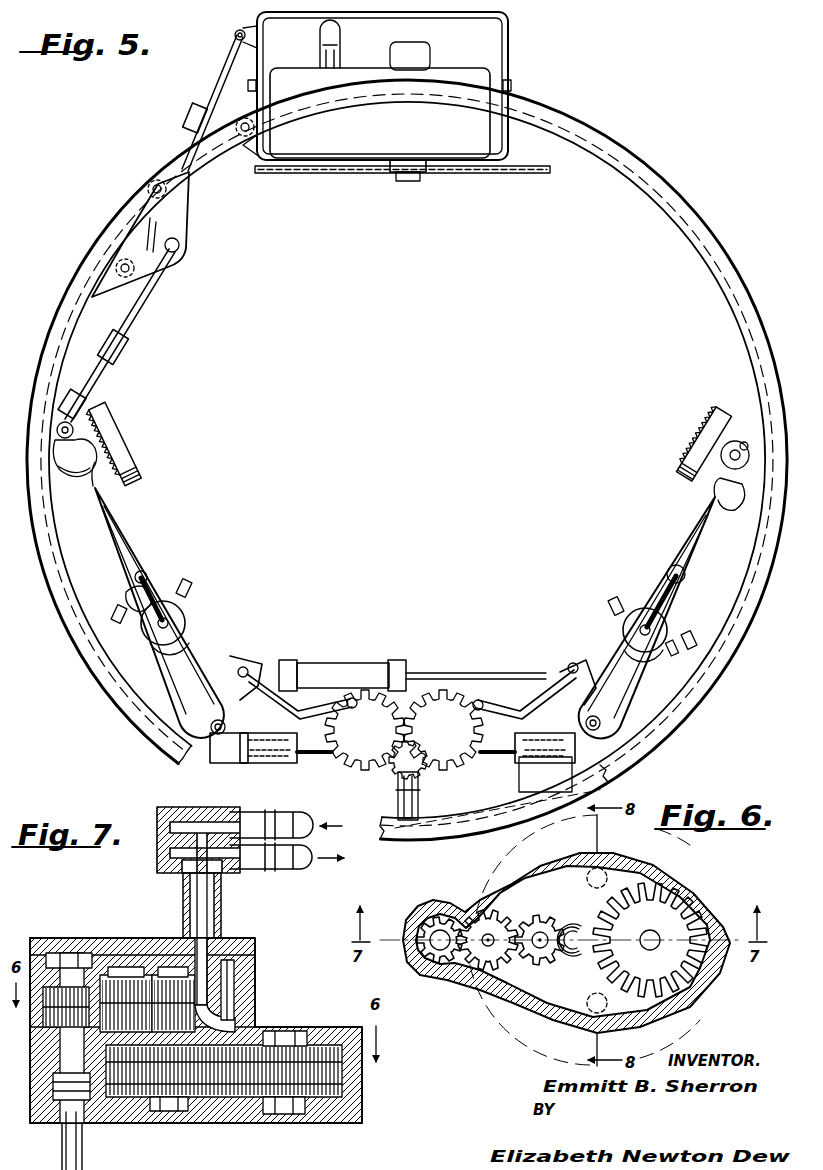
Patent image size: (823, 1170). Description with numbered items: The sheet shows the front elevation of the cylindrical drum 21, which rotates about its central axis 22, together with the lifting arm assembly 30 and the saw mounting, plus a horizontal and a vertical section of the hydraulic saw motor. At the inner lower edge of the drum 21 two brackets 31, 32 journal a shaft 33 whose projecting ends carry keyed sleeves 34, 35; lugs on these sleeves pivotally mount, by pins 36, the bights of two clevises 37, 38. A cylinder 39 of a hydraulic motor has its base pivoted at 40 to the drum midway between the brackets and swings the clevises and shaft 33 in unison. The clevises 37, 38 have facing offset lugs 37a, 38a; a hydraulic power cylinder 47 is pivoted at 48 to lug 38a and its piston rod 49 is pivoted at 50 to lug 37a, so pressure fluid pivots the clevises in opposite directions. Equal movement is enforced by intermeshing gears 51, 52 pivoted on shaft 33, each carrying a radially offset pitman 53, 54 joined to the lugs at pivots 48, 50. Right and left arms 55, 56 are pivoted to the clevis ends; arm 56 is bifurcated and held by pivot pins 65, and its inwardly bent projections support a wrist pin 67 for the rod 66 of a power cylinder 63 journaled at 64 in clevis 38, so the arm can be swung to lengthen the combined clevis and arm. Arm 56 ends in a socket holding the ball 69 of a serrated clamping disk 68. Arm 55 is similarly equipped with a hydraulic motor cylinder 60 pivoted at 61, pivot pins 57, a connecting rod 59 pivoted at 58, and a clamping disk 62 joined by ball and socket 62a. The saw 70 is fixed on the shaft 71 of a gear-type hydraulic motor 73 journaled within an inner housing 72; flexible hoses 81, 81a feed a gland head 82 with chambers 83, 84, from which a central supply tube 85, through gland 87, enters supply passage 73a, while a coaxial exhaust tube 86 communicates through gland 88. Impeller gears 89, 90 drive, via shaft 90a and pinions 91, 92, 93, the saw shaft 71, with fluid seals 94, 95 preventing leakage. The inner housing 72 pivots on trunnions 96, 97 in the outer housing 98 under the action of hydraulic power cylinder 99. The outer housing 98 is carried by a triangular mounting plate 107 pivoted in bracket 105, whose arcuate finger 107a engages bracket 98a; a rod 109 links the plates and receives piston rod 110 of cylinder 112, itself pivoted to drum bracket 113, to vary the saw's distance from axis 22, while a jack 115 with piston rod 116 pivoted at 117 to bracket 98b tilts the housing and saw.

In FIG. 5, the drum 21 is at (646, 173).
In FIG. 5, the central axis 22 is at (407, 463).
In FIG. 5, the lifting arm assembly 30 is at (318, 650).
In FIG. 5, the bracket 31 is at (524, 775).
In FIG. 5, the bracket 32 is at (296, 762).
In FIG. 5, the shaft 33 is at (506, 757).
In FIG. 5, the sleeve 34 is at (607, 752).
In FIG. 5, the sleeve 35 is at (232, 742).
In FIG. 5, the pins 36 is at (216, 720).
In FIG. 5, the clevis 37 is at (648, 673).
In FIG. 5, the lug 37a is at (596, 672).
In FIG. 5, the clevis 38 is at (162, 690).
In FIG. 5, the lug 38a is at (246, 662).
In FIG. 5, the cylinder 39 is at (400, 773).
In FIG. 5, the pivot 40 is at (418, 796).
In FIG. 5, the hydraulic power cylinder 47 is at (326, 680).
In FIG. 5, the pivot 48 is at (250, 670).
In FIG. 5, the piston rod 49 is at (433, 678).
In FIG. 5, the pivot 50 is at (571, 666).
In FIG. 5, the gear 51 is at (456, 764).
In FIG. 5, the gear 52 is at (363, 762).
In FIG. 5, the pitman 53 is at (526, 694).
In FIG. 5, the pitman 54 is at (278, 688).
In FIG. 5, the right arm 55 is at (700, 513).
In FIG. 5, the left arm 56 is at (110, 514).
In FIG. 5, the pivot pins 57 is at (624, 598).
In FIG. 5, the pivot 58 is at (680, 568).
In FIG. 5, the connecting rod 59 is at (675, 647).
In FIG. 5, the hydraulic motor cylinder 60 is at (644, 650).
In FIG. 5, the pivot 61 is at (632, 632).
In FIG. 5, the clamping disk 62 is at (690, 445).
In FIG. 5, the ball and socket 62a is at (731, 458).
In FIG. 5, the power cylinder 63 is at (180, 619).
In FIG. 5, the journal 64 is at (150, 648).
In FIG. 5, the pivot pins 65 is at (188, 597).
In FIG. 5, the rod 66 is at (166, 575).
In FIG. 5, the wrist pin 67 is at (124, 597).
In FIG. 5, the clamping disk 68 is at (121, 462).
In FIG. 5, the ball 69 is at (78, 458).
In FIG. 5, the saw 70 is at (353, 176).
In FIG. 5, the shaft 71 is at (410, 182).
In FIG. 7, the shaft 71 is at (82, 1155).
In FIG. 6, the shaft 71 is at (437, 950).
In FIG. 5, the inner housing 72 is at (481, 137).
In FIG. 7, the hydraulic motor 73 is at (258, 1122).
In FIG. 6, the hydraulic motor 73 is at (727, 914).
In FIG. 7, the supply passage 73a is at (236, 1012).
In FIG. 6, the supply passage 73a is at (580, 1029).
In FIG. 7, the flexible hose 81 is at (300, 818).
In FIG. 7, the flexible hose 81a is at (299, 866).
In FIG. 5, the gland head 82 is at (425, 52).
In FIG. 7, the gland head 82 is at (170, 808).
In FIG. 7, the fluid chamber 83 is at (176, 828).
In FIG. 7, the fluid chamber 84 is at (170, 862).
In FIG. 7, the central supply tube 85 is at (196, 883).
In FIG. 7, the exhaust tube 86 is at (184, 908).
In FIG. 6, the exhaust tube 86 is at (604, 851).
In FIG. 7, the gland 87 is at (178, 850).
In FIG. 7, the gland 88 is at (160, 874).
In FIG. 7, the impeller gear 89 is at (306, 1043).
In FIG. 6, the impeller gear 89 is at (688, 900).
In FIG. 7, the impeller gear 90 is at (211, 1098).
In FIG. 6, the impeller gear 90 is at (548, 998).
In FIG. 7, the shaft 90a is at (175, 1112).
In FIG. 7, the pinion 91 is at (165, 990).
In FIG. 6, the pinion 91 is at (541, 962).
In FIG. 7, the pinion 92 is at (120, 978).
In FIG. 6, the pinion 92 is at (486, 955).
In FIG. 7, the pinion 93 is at (70, 986).
In FIG. 6, the pinion 93 is at (446, 962).
In FIG. 7, the fluid seal 94 is at (219, 1027).
In FIG. 6, the fluid seal 94 is at (569, 940).
In FIG. 7, the fluid seal 95 is at (50, 1124).
In FIG. 5, the trunnion 96 is at (249, 95).
In FIG. 5, the trunnion 97 is at (512, 87).
In FIG. 5, the outer housing 98 is at (508, 54).
In FIG. 5, the bracket 98a is at (262, 143).
In FIG. 5, the bracket 98b is at (236, 32).
In FIG. 5, the hydraulic power cylinder 99 is at (338, 37).
In FIG. 5, the bracket 105 is at (120, 263).
In FIG. 5, the mounting plate 107 is at (165, 234).
In FIG. 5, the arcuate finger 107a is at (211, 165).
In FIG. 5, the rod 109 is at (181, 252).
In FIG. 5, the piston rod 110 is at (136, 319).
In FIG. 5, the cylinder 112 is at (114, 378).
In FIG. 5, the bracket 113 is at (49, 433).
In FIG. 5, the hydraulic power cylinder 115 is at (191, 137).
In FIG. 5, the piston rod 116 is at (219, 78).
In FIG. 5, the pivot 117 is at (246, 36).